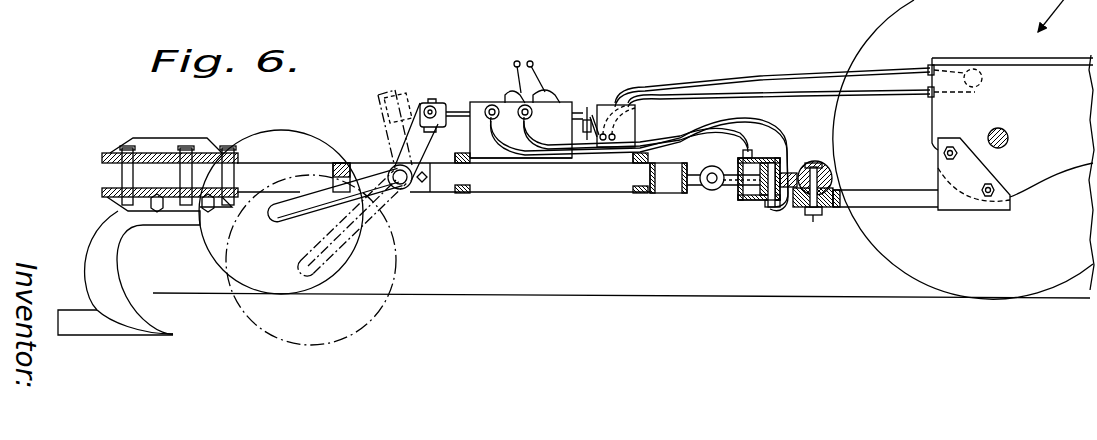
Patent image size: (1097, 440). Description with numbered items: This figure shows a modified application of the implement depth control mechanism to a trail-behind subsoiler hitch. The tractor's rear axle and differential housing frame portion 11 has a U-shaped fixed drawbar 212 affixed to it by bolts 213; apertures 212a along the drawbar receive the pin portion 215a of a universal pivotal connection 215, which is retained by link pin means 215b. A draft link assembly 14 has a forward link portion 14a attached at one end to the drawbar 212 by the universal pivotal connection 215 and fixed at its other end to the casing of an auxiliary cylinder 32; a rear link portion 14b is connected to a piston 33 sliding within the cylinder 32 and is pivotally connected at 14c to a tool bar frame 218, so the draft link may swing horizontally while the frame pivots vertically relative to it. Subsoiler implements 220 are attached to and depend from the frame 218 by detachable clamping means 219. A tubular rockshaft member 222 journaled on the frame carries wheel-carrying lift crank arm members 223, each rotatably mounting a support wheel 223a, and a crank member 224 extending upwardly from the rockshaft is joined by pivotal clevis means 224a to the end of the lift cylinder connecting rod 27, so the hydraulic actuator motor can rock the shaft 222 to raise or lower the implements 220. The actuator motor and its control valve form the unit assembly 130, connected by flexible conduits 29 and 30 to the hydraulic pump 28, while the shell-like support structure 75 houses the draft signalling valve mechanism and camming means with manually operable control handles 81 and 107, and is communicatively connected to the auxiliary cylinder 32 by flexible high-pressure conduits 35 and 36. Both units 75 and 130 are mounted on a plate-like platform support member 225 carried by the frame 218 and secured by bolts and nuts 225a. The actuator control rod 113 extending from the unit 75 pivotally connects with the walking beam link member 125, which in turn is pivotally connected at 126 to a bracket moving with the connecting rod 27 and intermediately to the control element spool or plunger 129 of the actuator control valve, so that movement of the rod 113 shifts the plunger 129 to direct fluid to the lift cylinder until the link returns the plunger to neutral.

The rear axle and differential housing frame portion 11 is at (945, 113).
The draft link assembly 14 is at (726, 191).
The forward link portion 14a is at (785, 208).
The rear link portion 14b is at (730, 174).
The pivotal connection 14c is at (708, 191).
The connecting rod 27 is at (455, 111).
The pump 28 is at (983, 83).
The conduit 29 is at (768, 77).
The conduit 30 is at (803, 91).
The auxiliary cylinder 32 is at (756, 200).
The piston 33 is at (763, 201).
The flexible high-pressure conduit 35 is at (491, 120).
The flexible high-pressure conduit 36 is at (528, 138).
The support structure 75 is at (480, 96).
The control handle member 81 is at (521, 61).
The control handle 107 is at (541, 82).
The actuator control rod 113 is at (578, 152).
The walking beam link member 125 is at (530, 137).
The pivotal connection 126 is at (588, 106).
The control element spool or plunger 129 is at (596, 112).
The unit assembly 130 is at (638, 123).
The fixed drawbar 212 is at (900, 208).
The apertures 212a is at (839, 189).
The bolts 213 is at (957, 154).
The universal pivotal connection 215 is at (829, 184).
The pin portion 215a is at (811, 165).
The link pin means 215b is at (828, 223).
The tool bar frame 218 is at (455, 201).
The detachable connecting or clamping means 219 is at (152, 153).
The subsoiler implement 220 is at (125, 279).
The tubular rockshaft member 222 is at (403, 190).
The wheel-carrying lift crank arm member 223 is at (303, 197).
The support wheel 223a is at (252, 136).
The crank member 224 is at (387, 138).
The pivotal clevis means 224a is at (436, 100).
The platform support member 225 is at (502, 164).
The bolts and nuts 225a is at (463, 149).